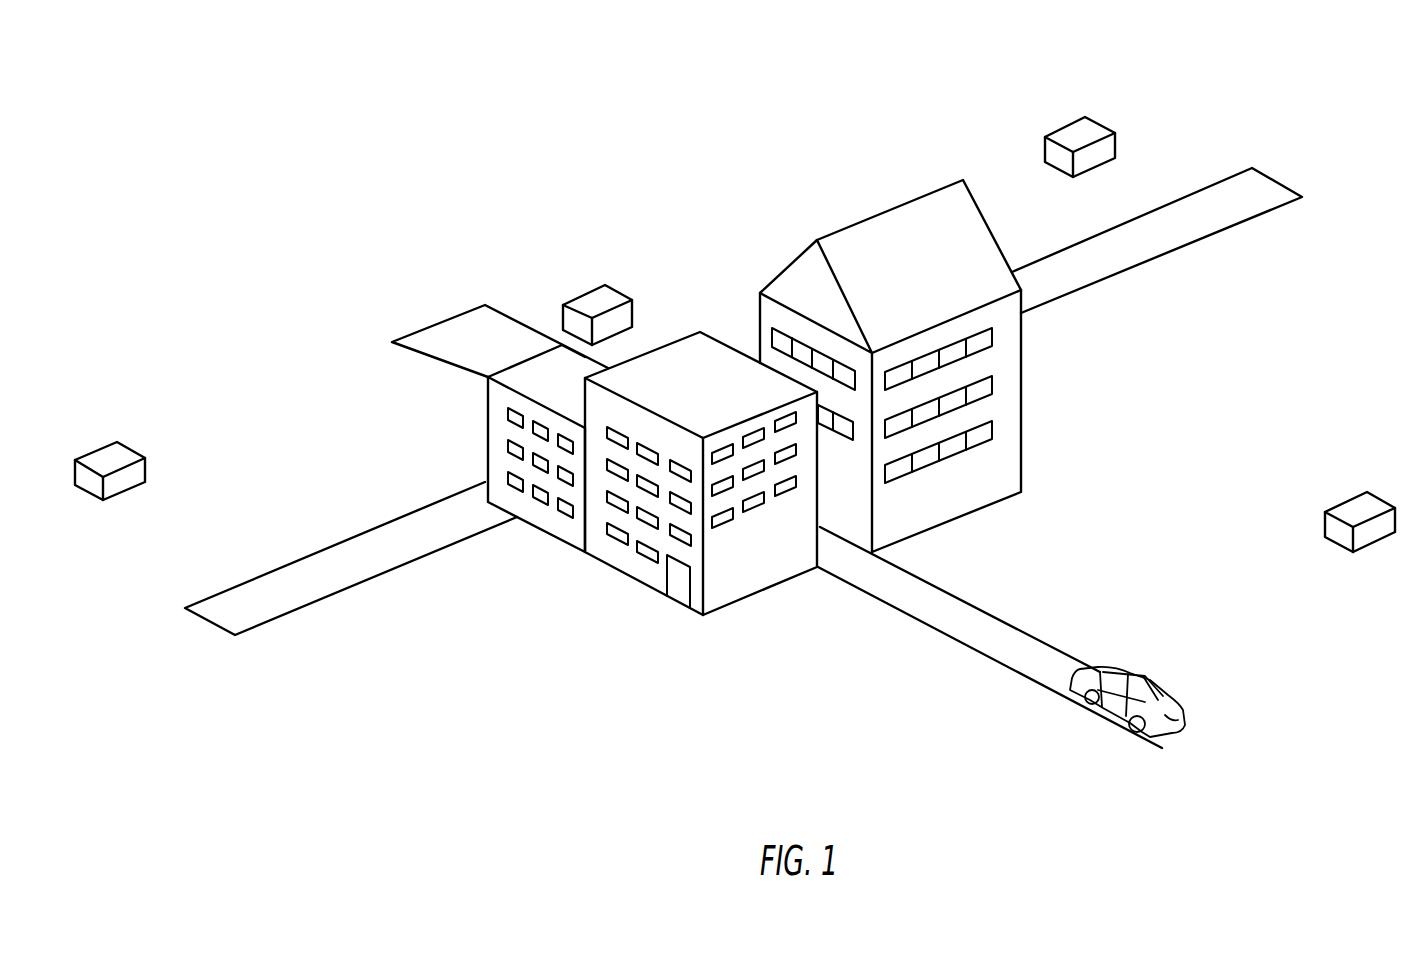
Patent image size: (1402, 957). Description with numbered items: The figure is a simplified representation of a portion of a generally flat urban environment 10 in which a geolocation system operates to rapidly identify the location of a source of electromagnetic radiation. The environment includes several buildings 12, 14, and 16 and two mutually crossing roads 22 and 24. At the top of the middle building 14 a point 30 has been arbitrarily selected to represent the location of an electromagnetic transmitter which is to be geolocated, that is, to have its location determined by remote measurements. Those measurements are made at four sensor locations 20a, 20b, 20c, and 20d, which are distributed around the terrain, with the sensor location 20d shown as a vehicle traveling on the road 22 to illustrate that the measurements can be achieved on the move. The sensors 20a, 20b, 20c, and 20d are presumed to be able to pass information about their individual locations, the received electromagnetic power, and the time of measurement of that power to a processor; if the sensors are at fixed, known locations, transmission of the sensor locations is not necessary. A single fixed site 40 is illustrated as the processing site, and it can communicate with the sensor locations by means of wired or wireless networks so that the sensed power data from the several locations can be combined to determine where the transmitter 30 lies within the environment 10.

The urban environment 10 is at (519, 782).
The building 12 is at (496, 400).
The building 14 is at (701, 469).
The building 16 is at (997, 475).
The sensor location 20a is at (115, 455).
The sensor location 20b is at (598, 302).
The sensor location 20c is at (1358, 505).
The vehicle sensor location 20d is at (1152, 690).
The road 22 is at (447, 350).
The road 24 is at (370, 553).
The electromagnetic transmitter location 30 is at (703, 385).
The fixed processing site 40 is at (1080, 125).